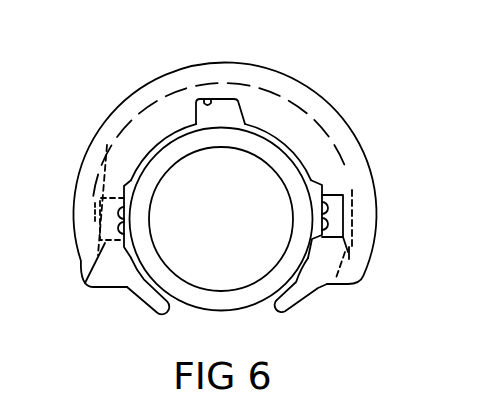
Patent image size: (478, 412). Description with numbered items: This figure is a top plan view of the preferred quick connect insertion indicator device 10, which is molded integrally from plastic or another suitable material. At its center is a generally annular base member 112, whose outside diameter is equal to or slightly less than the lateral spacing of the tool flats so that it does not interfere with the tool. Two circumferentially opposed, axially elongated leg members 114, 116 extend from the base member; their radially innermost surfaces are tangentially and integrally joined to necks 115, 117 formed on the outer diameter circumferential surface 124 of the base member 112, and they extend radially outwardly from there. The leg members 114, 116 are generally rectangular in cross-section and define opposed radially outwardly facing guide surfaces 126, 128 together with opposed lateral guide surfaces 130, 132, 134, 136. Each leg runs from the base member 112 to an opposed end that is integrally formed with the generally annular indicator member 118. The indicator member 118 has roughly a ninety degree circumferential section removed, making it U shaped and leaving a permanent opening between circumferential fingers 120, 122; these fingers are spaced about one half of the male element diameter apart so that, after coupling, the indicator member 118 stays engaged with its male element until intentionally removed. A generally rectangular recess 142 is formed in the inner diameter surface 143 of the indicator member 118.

The insertion indicator device 10 is at (136, 58).
The base member 112 is at (136, 204).
The leg member 114 is at (340, 226).
The neck 115 is at (312, 216).
The leg member 116 is at (79, 273).
The neck 117 is at (137, 228).
The indicator member 118 is at (341, 139).
The circumferential finger 120 is at (150, 314).
The circumferential finger 122 is at (290, 303).
The outer diameter circumferential surface 124 is at (187, 309).
The guide surface 126 is at (80, 175).
The guide surface 128 is at (340, 202).
The lateral guide surface 130 is at (101, 127).
The lateral guide surface 132 is at (96, 302).
The lateral guide surface 134 is at (350, 172).
The lateral guide surface 136 is at (346, 253).
The recess 142 is at (208, 101).
The inner diameter surface 143 is at (266, 128).